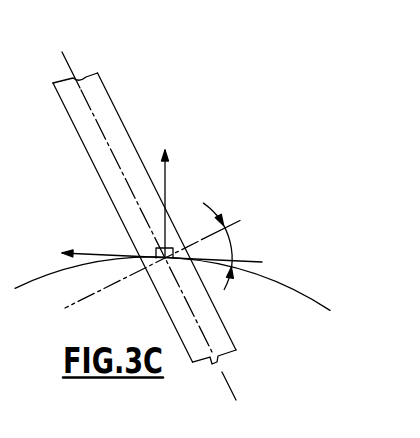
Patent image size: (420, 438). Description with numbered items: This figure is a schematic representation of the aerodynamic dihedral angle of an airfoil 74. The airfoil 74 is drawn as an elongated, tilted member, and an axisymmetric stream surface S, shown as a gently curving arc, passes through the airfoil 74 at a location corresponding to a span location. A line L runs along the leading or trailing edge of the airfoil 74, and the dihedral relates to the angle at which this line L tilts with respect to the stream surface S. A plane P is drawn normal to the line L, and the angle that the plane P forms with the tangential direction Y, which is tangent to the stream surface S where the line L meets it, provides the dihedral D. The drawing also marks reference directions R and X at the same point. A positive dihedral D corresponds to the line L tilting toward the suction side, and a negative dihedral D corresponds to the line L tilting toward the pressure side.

The airfoil 74 is at (132, 120).
The line along the leading or trailing edge L is at (237, 399).
The axisymmetric stream surface S is at (285, 283).
The radial axis R is at (167, 179).
The tangential direction Y is at (154, 246).
The contact point X is at (165, 262).
The plane normal to the line P is at (231, 222).
The aerodynamic dihedral angle D is at (232, 245).